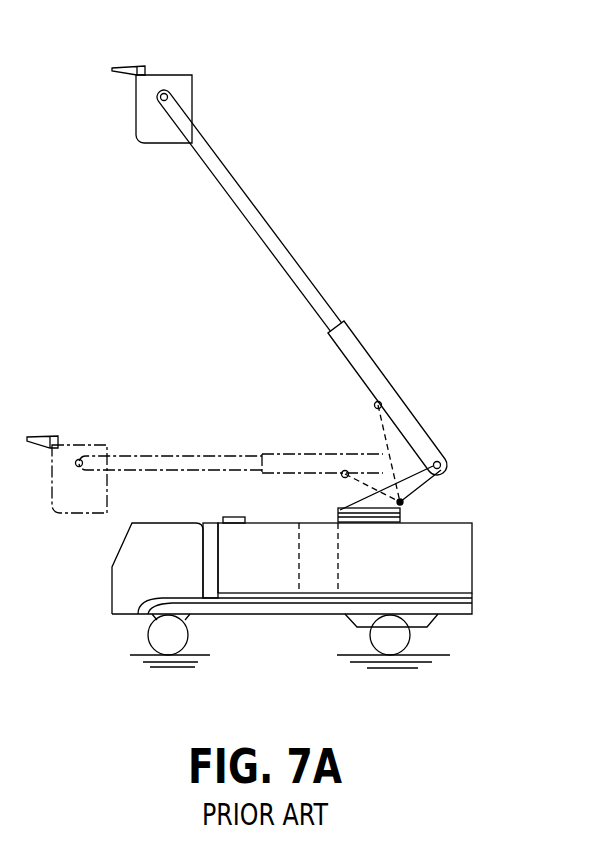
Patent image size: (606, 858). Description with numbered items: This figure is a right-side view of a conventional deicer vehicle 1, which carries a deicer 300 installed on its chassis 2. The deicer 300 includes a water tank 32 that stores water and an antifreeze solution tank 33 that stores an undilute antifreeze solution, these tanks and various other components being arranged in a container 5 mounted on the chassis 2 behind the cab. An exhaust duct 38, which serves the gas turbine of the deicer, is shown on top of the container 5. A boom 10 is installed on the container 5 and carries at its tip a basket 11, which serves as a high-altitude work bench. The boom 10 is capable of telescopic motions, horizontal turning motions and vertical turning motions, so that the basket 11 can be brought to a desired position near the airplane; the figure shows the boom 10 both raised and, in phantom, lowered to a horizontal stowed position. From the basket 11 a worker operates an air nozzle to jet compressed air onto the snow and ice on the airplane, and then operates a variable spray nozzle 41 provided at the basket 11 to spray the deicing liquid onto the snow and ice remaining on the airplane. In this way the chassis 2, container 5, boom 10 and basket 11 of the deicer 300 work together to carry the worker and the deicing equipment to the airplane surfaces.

The deicer vehicle 1 is at (118, 629).
The chassis 2 is at (242, 614).
The container 5 is at (458, 552).
The boom 10 is at (305, 256).
The basket 11 is at (178, 75).
The water tank 32 is at (263, 533).
The antifreeze solution tank 33 is at (313, 535).
The exhaust duct 38 is at (223, 517).
The variable spray nozzle 41 is at (124, 66).
The deicer 300 is at (293, 631).